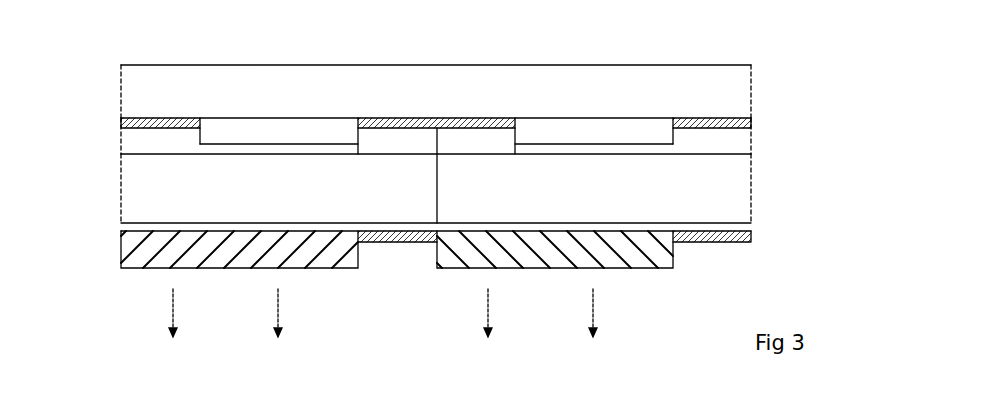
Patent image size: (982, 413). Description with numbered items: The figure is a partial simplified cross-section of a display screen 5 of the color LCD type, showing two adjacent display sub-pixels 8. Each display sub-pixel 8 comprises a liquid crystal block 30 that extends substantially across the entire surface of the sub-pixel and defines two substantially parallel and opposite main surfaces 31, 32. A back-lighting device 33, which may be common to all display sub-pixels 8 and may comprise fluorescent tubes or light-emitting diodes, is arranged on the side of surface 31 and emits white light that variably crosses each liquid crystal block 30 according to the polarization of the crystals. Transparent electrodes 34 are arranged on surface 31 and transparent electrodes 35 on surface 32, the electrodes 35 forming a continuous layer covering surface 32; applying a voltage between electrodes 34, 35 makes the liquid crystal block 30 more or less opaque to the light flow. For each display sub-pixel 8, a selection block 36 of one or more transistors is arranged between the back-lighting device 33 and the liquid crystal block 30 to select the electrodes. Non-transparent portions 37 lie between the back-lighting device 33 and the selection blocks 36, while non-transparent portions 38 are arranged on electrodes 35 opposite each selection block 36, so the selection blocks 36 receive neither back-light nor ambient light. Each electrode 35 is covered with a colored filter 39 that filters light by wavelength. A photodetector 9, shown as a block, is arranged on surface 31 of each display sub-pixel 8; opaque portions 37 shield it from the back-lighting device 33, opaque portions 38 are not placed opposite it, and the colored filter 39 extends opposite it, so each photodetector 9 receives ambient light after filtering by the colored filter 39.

The display screen 5 is at (618, 53).
The display sub-pixel 8 is at (118, 205).
The photodetector 9 is at (167, 140).
The liquid crystal block 30 is at (122, 197).
The main surface 31 is at (140, 154).
The main surface 32 is at (137, 248).
The back-lighting device 33 is at (137, 85).
The electrodes 34 is at (220, 151).
The electrodes 35 is at (123, 226).
The selection block 36 is at (405, 142).
The non-transparent portion 37 is at (140, 117).
The non-transparent portion 38 is at (392, 242).
The colored filter 39 is at (323, 258).